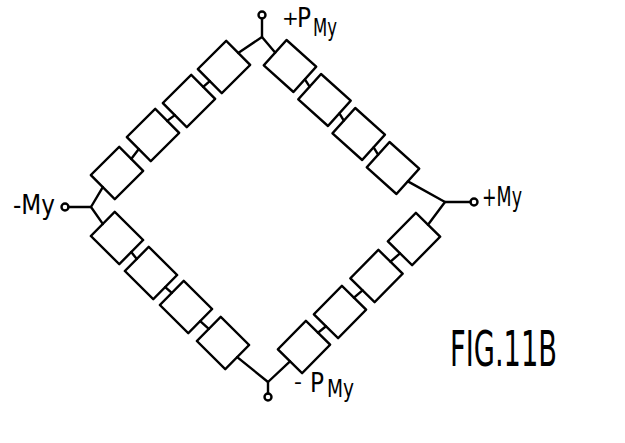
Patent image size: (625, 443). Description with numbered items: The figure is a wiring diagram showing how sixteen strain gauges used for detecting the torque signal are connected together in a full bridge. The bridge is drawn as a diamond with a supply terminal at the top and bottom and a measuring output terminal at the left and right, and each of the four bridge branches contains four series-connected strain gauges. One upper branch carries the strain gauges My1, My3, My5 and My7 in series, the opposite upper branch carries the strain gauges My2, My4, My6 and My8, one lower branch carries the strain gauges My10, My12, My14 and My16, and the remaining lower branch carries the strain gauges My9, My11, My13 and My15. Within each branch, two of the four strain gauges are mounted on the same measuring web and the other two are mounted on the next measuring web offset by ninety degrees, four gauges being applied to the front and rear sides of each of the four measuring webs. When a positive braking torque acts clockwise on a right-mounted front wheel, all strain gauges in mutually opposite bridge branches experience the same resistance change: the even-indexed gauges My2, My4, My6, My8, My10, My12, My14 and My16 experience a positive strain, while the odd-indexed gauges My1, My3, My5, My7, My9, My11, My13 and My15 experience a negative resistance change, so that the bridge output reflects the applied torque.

The strain gauge My1 is at (112, 158).
The strain gauge My2 is at (312, 62).
The strain gauge My3 is at (153, 123).
The strain gauge My4 is at (338, 93).
The strain gauge My5 is at (182, 88).
The strain gauge My6 is at (365, 115).
The strain gauge My7 is at (212, 55).
The strain gauge My8 is at (402, 160).
The strain gauge My9 is at (317, 350).
The strain gauge My10 is at (100, 244).
The strain gauge My11 is at (347, 317).
The strain gauge My12 is at (133, 278).
The strain gauge My13 is at (389, 278).
The strain gauge My14 is at (175, 315).
The strain gauge My15 is at (430, 237).
The strain gauge My16 is at (215, 358).